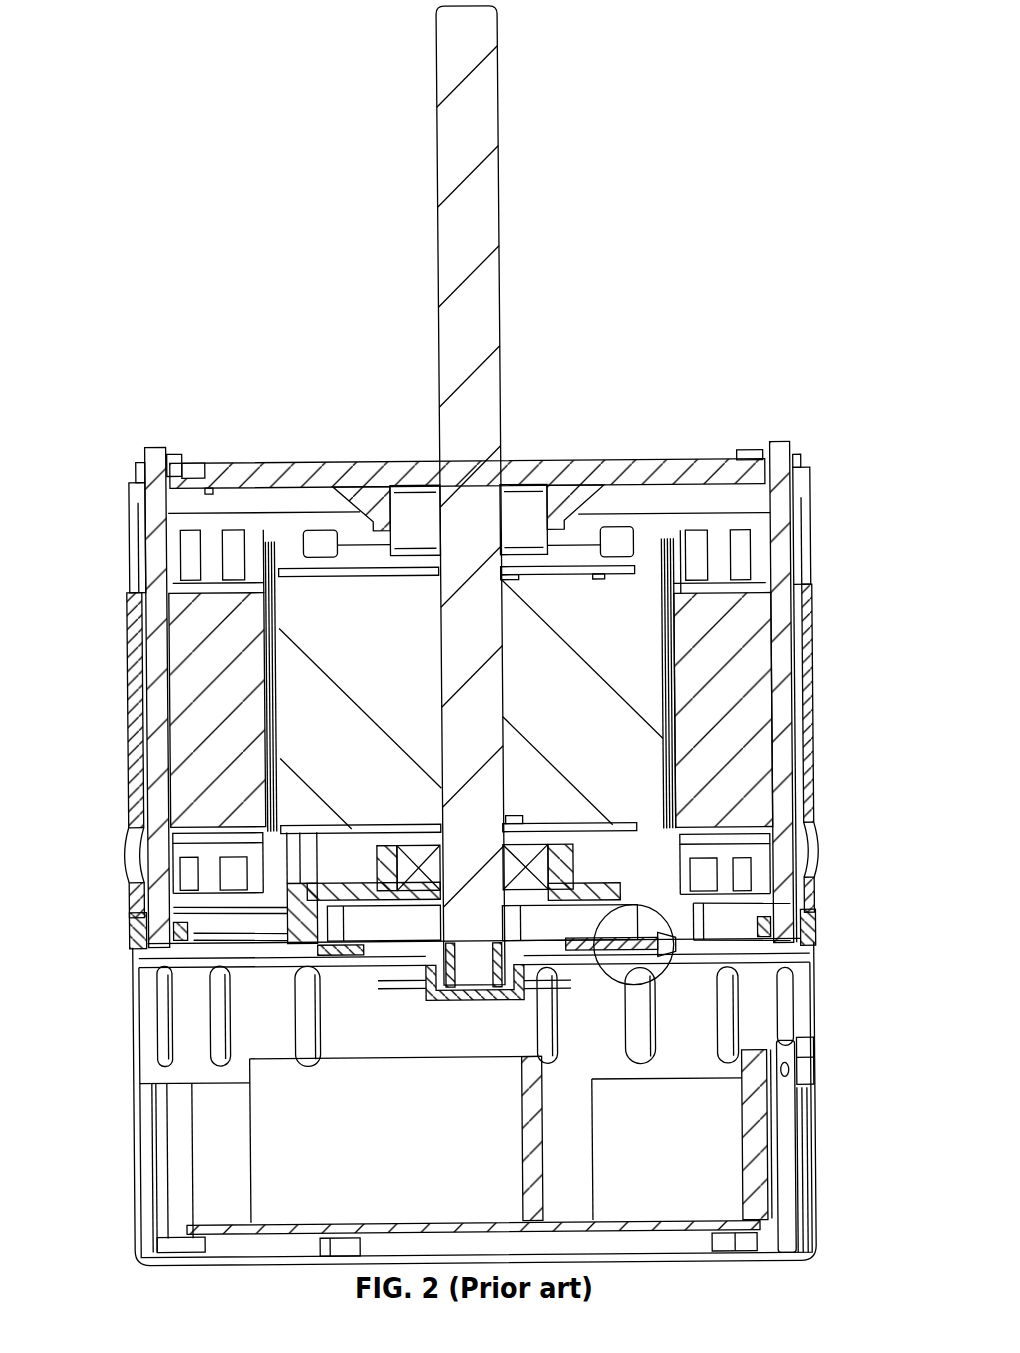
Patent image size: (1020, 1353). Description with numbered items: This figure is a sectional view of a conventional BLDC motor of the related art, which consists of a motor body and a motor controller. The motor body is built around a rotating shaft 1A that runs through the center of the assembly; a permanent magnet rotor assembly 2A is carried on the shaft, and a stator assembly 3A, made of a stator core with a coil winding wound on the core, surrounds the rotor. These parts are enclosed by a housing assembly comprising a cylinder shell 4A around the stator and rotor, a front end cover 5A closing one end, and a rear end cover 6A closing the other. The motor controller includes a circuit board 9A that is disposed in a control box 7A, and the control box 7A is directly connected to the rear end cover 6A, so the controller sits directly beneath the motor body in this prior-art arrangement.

The rotating shaft 1A is at (468, 107).
The permanent magnet rotor assembly 2A is at (590, 653).
The stator assembly 3A is at (735, 735).
The cylinder shell 4A is at (128, 795).
The front end cover 5A is at (548, 455).
The rear end cover 6A is at (812, 930).
The control box 7A is at (790, 1243).
The circuit board 9A is at (235, 1232).